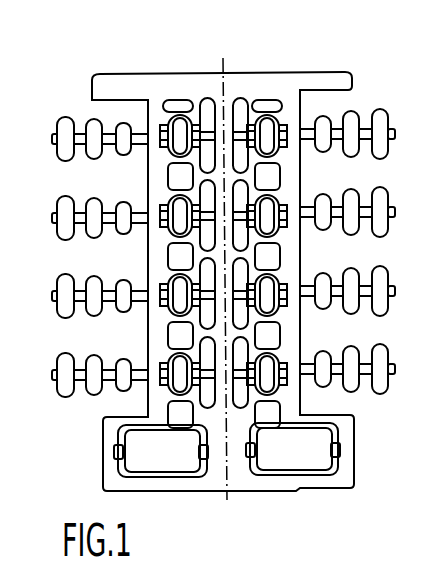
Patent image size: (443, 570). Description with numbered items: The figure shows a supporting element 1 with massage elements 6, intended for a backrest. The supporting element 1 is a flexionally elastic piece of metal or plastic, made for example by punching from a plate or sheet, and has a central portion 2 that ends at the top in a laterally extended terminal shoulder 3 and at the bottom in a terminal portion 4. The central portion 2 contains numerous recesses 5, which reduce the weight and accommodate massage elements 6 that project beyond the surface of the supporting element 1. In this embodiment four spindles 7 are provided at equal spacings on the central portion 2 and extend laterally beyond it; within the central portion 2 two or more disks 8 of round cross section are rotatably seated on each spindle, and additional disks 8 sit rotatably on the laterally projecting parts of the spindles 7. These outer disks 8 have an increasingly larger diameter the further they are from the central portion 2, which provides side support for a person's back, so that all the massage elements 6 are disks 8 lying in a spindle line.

The supporting element 1 is at (345, 72).
The central portion 2 is at (228, 118).
The terminal shoulder 3 is at (171, 88).
The terminal portion 4 is at (217, 467).
The recesses 5 is at (212, 100).
The massage elements 6 is at (172, 463).
The spindles 7 is at (390, 206).
The disks 8 is at (125, 312).